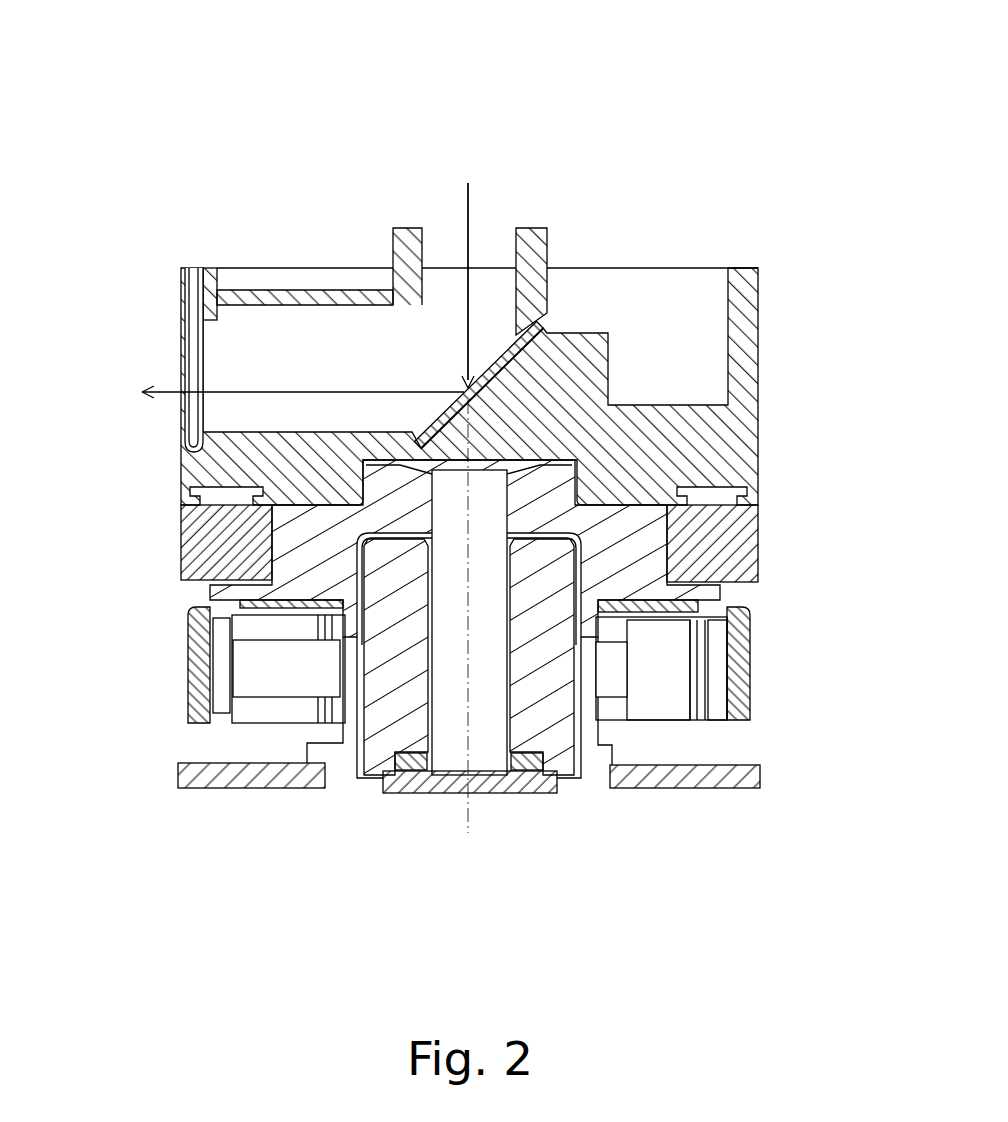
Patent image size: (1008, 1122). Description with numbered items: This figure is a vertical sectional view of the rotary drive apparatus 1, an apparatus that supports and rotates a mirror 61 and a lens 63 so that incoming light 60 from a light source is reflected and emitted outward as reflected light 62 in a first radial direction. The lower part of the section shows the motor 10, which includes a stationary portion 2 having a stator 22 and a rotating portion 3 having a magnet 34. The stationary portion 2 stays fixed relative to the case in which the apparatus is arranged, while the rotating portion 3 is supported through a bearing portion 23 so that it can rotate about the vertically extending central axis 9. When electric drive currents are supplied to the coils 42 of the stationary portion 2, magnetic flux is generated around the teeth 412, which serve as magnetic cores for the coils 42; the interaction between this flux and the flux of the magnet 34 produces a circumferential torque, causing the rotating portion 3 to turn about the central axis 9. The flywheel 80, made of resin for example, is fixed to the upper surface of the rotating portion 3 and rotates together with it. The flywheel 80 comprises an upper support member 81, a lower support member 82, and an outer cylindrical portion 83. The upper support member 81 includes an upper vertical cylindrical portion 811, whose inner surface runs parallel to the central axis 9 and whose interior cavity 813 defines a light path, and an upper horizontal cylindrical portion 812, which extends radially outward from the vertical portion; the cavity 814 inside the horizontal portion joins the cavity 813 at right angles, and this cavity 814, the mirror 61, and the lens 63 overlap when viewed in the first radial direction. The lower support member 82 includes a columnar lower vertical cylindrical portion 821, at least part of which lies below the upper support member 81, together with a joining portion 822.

The rotary drive apparatus 1 is at (517, 108).
The flywheel 80 is at (772, 410).
The lens 63 is at (190, 266).
The upper support member 81 is at (315, 201).
The upper horizontal cylindrical portion 812 is at (298, 300).
The upper vertical cylindrical portion 811 is at (392, 262).
The cavity 813 is at (490, 297).
The mirror 61 is at (548, 248).
The incoming light 60 is at (468, 247).
The central axis 9 is at (468, 213).
The reflected light 62 is at (261, 393).
The cavity 814 is at (243, 403).
The lower support member 82 is at (646, 301).
The lower vertical cylindrical portion 821 is at (585, 362).
The joining portion 822 is at (660, 436).
The outer cylindrical portion 83 is at (744, 300).
The rotating portion 3 is at (155, 565).
The stator 22 is at (648, 730).
The motor 10 is at (780, 675).
The coils 42 is at (278, 634).
The teeth 412 is at (285, 685).
The magnet 34 is at (719, 692).
The bearing portion 23 is at (522, 770).
The stationary portion 2 is at (388, 802).